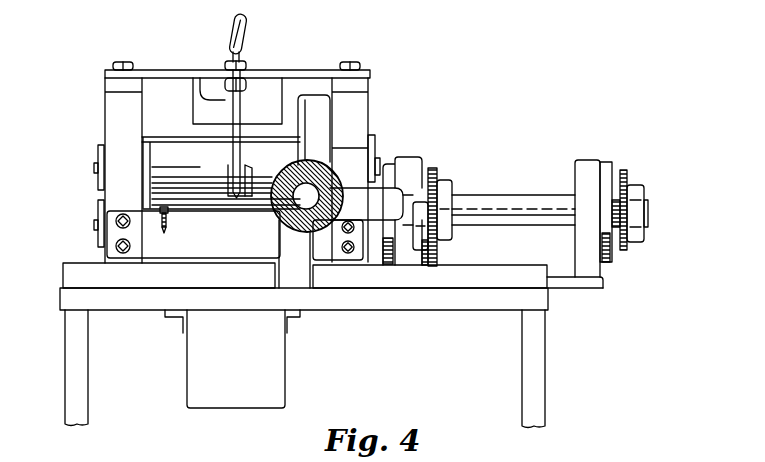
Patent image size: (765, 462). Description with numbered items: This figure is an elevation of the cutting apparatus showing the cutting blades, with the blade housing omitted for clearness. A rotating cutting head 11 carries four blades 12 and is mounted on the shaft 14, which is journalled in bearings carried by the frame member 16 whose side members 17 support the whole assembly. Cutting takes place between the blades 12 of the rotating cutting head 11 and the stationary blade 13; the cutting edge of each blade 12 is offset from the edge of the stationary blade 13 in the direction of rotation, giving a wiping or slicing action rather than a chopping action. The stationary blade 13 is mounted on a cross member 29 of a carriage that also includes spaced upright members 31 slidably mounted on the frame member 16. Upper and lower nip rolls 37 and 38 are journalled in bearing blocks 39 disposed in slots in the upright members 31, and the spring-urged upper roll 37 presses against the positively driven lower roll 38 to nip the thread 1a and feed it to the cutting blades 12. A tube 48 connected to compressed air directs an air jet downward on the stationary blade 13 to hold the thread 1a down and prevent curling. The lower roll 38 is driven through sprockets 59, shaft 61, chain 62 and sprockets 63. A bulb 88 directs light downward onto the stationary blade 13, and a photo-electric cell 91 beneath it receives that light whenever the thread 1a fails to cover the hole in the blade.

The thread 1a is at (250, 186).
The rotating cutting head 11 is at (288, 227).
The blades 12 is at (312, 96).
The stationary blade 13 is at (228, 186).
The shaft 14 is at (323, 187).
The frame member 16 is at (404, 315).
The side members 17 is at (65, 369).
The cross member 29 is at (180, 238).
The upright members 31 is at (105, 104).
The upper nip roll 37 is at (177, 146).
The lower nip roll 38 is at (188, 203).
The bearing blocks 39 is at (100, 152).
The tube 48 is at (233, 98).
The sprockets 59 is at (635, 182).
The shaft 61 is at (526, 198).
The chain 62 is at (435, 170).
The sprockets 63 is at (452, 183).
The bulb 88 is at (260, 85).
The photo-electric cell 91 is at (288, 360).